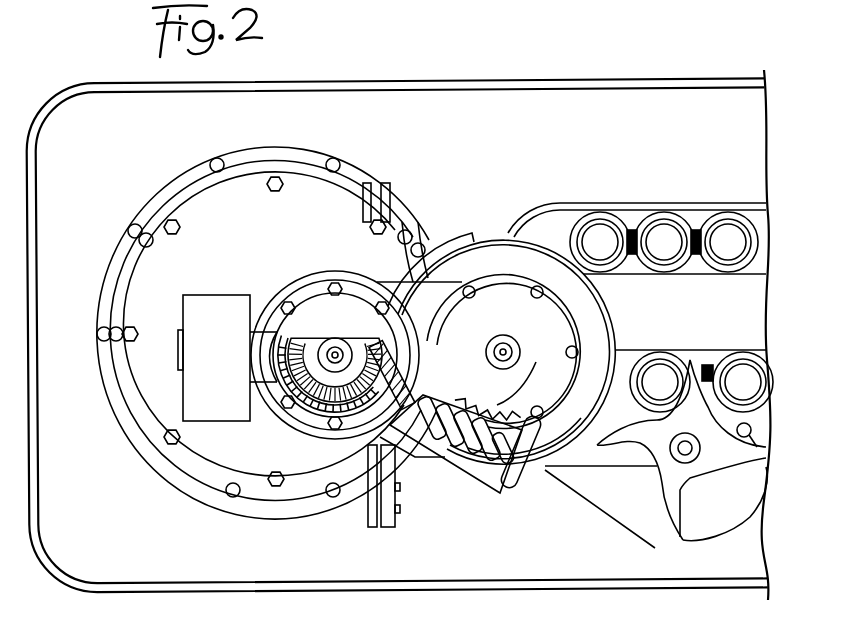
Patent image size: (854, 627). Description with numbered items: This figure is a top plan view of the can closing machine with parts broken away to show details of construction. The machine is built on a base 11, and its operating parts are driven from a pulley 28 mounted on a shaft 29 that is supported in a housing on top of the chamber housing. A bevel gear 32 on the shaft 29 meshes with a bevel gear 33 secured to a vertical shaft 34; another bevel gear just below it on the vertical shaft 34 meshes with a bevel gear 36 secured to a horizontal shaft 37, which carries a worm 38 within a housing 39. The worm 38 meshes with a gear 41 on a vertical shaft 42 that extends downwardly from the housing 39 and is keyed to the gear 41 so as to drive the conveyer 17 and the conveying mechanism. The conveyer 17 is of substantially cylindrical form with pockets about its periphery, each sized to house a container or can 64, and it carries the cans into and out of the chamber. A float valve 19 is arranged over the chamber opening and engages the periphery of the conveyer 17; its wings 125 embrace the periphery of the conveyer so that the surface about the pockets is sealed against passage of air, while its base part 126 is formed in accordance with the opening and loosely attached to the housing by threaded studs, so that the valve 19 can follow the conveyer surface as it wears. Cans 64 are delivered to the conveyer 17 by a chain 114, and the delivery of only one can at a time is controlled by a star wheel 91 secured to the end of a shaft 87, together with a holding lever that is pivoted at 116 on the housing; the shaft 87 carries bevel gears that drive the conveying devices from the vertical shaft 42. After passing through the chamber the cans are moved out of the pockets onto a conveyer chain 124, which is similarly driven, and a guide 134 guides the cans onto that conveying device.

The base 11 is at (458, 563).
The conveyer 17 is at (613, 325).
The float valve 19 is at (428, 262).
The pulley 28 is at (210, 304).
The shaft 29 is at (320, 425).
The bevel gear 32 is at (290, 402).
The bevel gear 33 is at (368, 340).
The vertical shaft 34 is at (333, 352).
The bevel gear 36 is at (385, 350).
The horizontal shaft 37 is at (532, 478).
The worm 38 is at (472, 468).
The housing 39 is at (487, 485).
The gear 41 is at (507, 405).
The vertical shaft 42 is at (507, 350).
The containers or cans 64 is at (671, 312).
The shaft 87 is at (688, 455).
The star wheel 91 is at (670, 503).
The chain 114 is at (710, 360).
The pivot 116 is at (738, 427).
The conveyer chain 124 is at (652, 214).
The wings 125 is at (490, 236).
The base part 126 is at (393, 522).
The guide 134 is at (590, 207).